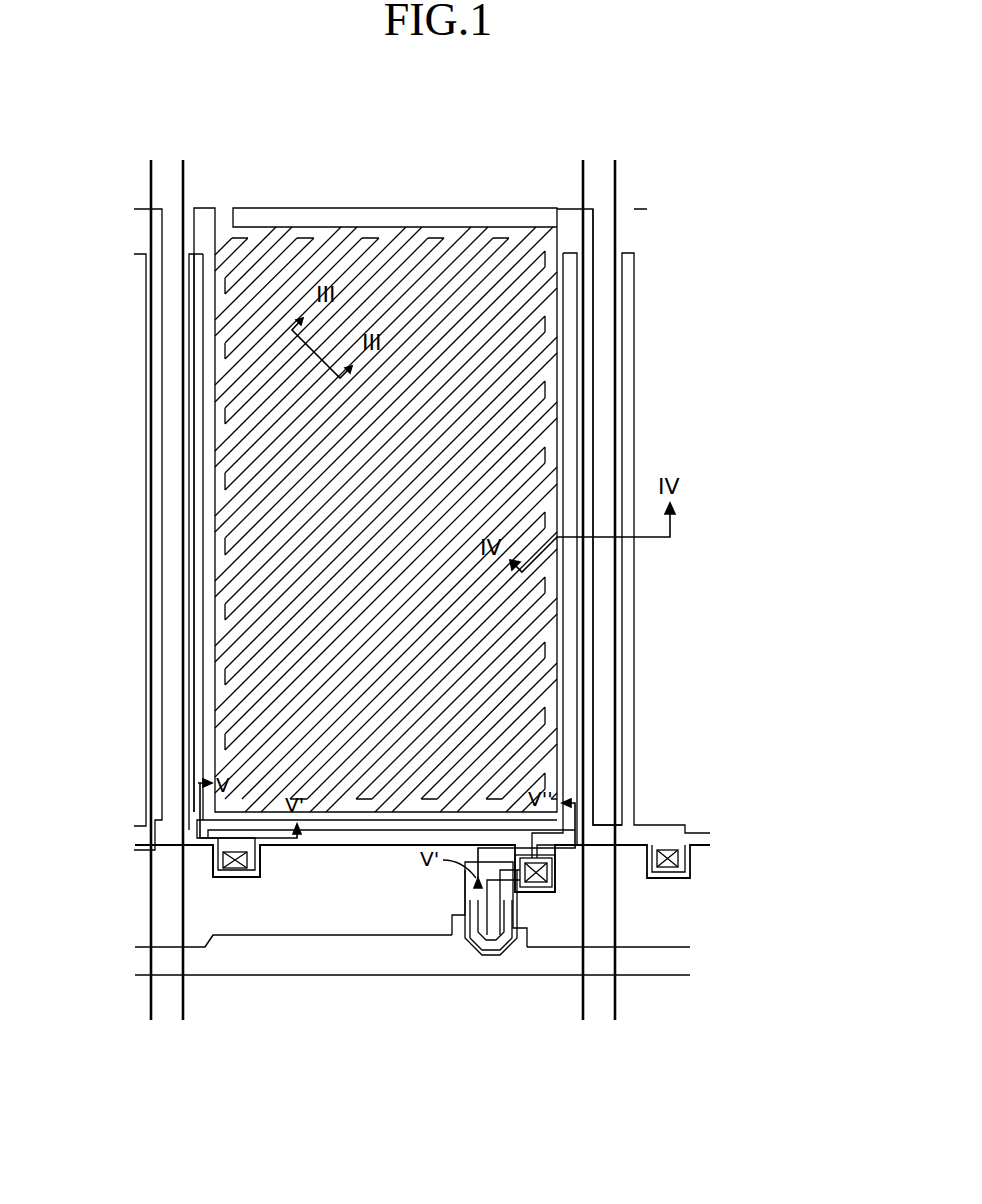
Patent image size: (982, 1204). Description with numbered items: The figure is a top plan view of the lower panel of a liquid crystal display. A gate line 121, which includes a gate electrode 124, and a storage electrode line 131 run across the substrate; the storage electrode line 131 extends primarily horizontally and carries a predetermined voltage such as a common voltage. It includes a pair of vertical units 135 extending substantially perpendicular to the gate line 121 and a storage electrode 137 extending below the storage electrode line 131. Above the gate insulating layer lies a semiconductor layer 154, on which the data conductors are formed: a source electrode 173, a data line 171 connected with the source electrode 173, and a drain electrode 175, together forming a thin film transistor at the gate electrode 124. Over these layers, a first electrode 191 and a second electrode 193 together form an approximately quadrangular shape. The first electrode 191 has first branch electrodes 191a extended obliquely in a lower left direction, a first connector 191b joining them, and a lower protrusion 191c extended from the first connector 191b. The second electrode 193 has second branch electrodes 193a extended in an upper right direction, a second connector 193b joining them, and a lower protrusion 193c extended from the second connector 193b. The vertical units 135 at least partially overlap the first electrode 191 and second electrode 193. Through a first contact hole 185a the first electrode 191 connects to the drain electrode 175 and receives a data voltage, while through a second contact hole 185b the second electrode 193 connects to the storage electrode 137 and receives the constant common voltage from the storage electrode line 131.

The gate line 121 is at (332, 975).
The gate electrode 124 is at (448, 937).
The storage electrode line 131 is at (343, 832).
The vertical units 135 is at (203, 650).
The storage electrode 137 is at (225, 882).
The semiconductor layer 154 is at (470, 890).
The data line 171 is at (183, 306).
The source electrode 173 is at (478, 952).
The drain electrode 175 is at (548, 868).
The first contact hole 185a is at (540, 885).
The second contact hole 185b is at (222, 862).
The first electrode 191 is at (505, 619).
The first branch electrodes 191a is at (420, 298).
The first connector 191b is at (598, 412).
The lower protrusion 191c is at (550, 872).
The second electrode 193 is at (439, 642).
The second branch electrodes 193a is at (270, 393).
The second connector 193b is at (192, 452).
The lower protrusion 193c is at (240, 875).